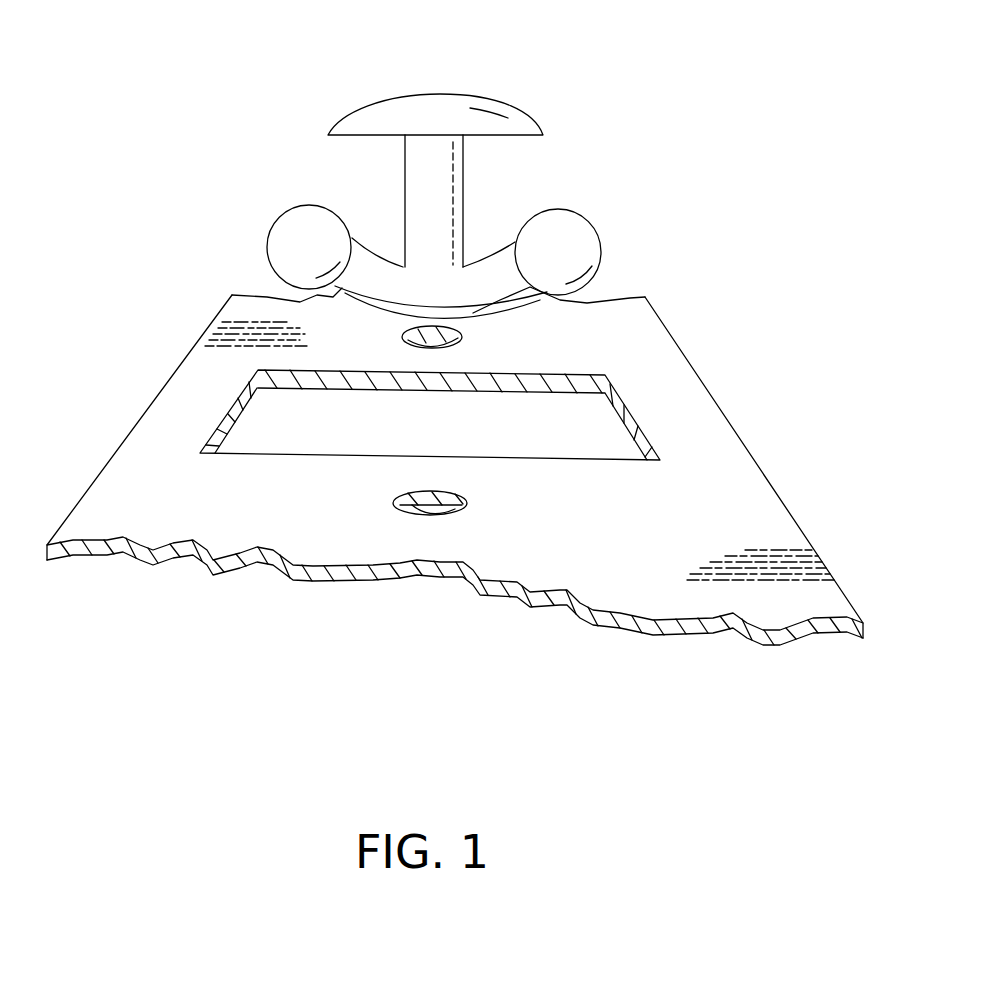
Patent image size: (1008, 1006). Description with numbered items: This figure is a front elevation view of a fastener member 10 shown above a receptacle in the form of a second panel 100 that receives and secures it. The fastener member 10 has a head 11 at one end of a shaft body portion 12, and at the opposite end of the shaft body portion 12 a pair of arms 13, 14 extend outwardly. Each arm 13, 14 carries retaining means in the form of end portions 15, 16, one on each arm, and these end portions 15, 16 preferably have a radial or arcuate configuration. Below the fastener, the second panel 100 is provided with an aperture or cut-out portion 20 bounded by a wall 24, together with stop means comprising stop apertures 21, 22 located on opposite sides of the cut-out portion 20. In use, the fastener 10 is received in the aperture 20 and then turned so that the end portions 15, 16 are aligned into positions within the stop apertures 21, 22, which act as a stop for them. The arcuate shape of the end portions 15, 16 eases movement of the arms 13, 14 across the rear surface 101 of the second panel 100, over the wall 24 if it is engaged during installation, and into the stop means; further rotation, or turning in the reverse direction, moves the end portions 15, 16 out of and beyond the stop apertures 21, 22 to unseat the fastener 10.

The fastener member 10 is at (518, 69).
The head 11 is at (372, 118).
The shaft body portion 12 is at (445, 198).
The arm 13 is at (366, 273).
The arm 14 is at (490, 277).
The end portion 15 is at (293, 242).
The end portion 16 is at (574, 247).
The aperture or cut-out portion 20 is at (290, 432).
The stop aperture 21 is at (437, 515).
The stop aperture 22 is at (458, 340).
The wall 24 is at (537, 390).
The second panel 100 is at (748, 517).
The rear surface 101 is at (586, 616).